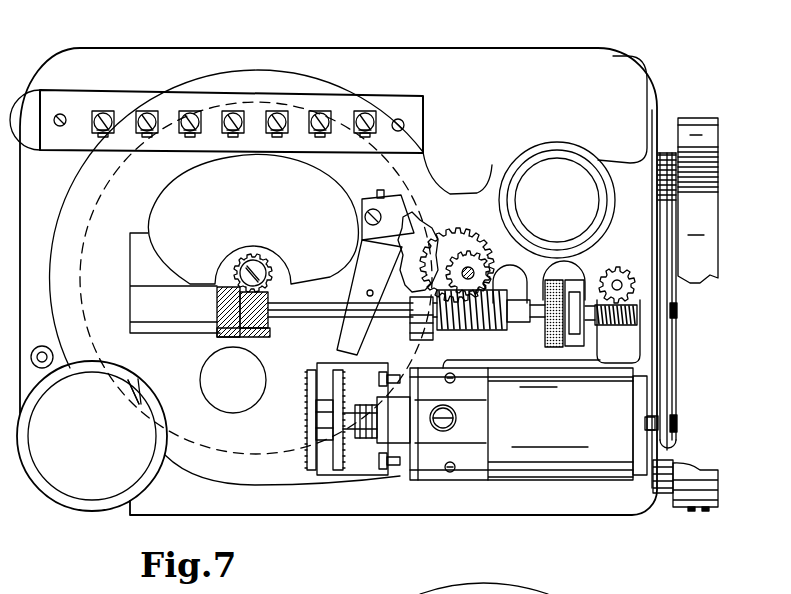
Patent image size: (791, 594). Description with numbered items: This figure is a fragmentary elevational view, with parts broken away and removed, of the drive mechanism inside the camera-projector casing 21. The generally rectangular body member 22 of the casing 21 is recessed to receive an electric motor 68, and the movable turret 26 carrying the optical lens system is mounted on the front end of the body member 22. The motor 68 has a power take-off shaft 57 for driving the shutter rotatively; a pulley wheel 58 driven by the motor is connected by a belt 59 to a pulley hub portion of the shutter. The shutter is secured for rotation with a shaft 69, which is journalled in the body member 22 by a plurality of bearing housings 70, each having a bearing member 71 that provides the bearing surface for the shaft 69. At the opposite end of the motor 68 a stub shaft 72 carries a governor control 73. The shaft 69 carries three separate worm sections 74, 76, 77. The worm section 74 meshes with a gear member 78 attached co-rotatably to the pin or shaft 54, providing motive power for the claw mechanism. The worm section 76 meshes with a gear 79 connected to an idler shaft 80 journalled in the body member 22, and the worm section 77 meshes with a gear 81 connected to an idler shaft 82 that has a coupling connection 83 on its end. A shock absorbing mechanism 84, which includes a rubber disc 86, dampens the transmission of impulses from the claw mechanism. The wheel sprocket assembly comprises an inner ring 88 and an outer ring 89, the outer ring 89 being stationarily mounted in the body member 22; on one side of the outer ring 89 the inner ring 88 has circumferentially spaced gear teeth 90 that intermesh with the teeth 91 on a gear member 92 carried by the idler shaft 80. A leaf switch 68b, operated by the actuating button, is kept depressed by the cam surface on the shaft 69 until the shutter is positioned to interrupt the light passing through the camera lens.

The casing 21 is at (527, 49).
The body member 22 is at (573, 72).
The movable turret 26 is at (700, 124).
The pin or shaft 54 is at (619, 285).
The power take-off shaft 57 is at (678, 426).
The pulley wheel 58 is at (671, 441).
The belt 59 is at (671, 368).
The electric motor 68 is at (538, 463).
The leaf switch 68b is at (375, 282).
The shaft 69 is at (330, 303).
The bearing housings 70 is at (183, 335).
The bearing member 71 is at (222, 287).
The stub shaft 72 is at (350, 432).
The governor control 73 is at (325, 457).
The worm section 74 is at (616, 326).
The worm section 76 is at (495, 331).
The worm section 77 is at (270, 325).
The gear member 78 is at (620, 274).
The gear 79 is at (468, 262).
The idler shaft 80 is at (473, 270).
The gear 81 is at (258, 263).
The idler shaft 82 is at (262, 271).
The coupling connection 83 is at (272, 289).
The shock absorbing mechanism 84 is at (561, 270).
The rubber disc 86 is at (556, 278).
The inner ring 88 is at (133, 393).
The outer ring 89 is at (100, 398).
The gear teeth 90 is at (413, 222).
The teeth 91 is at (453, 232).
The gear member 92 is at (478, 245).